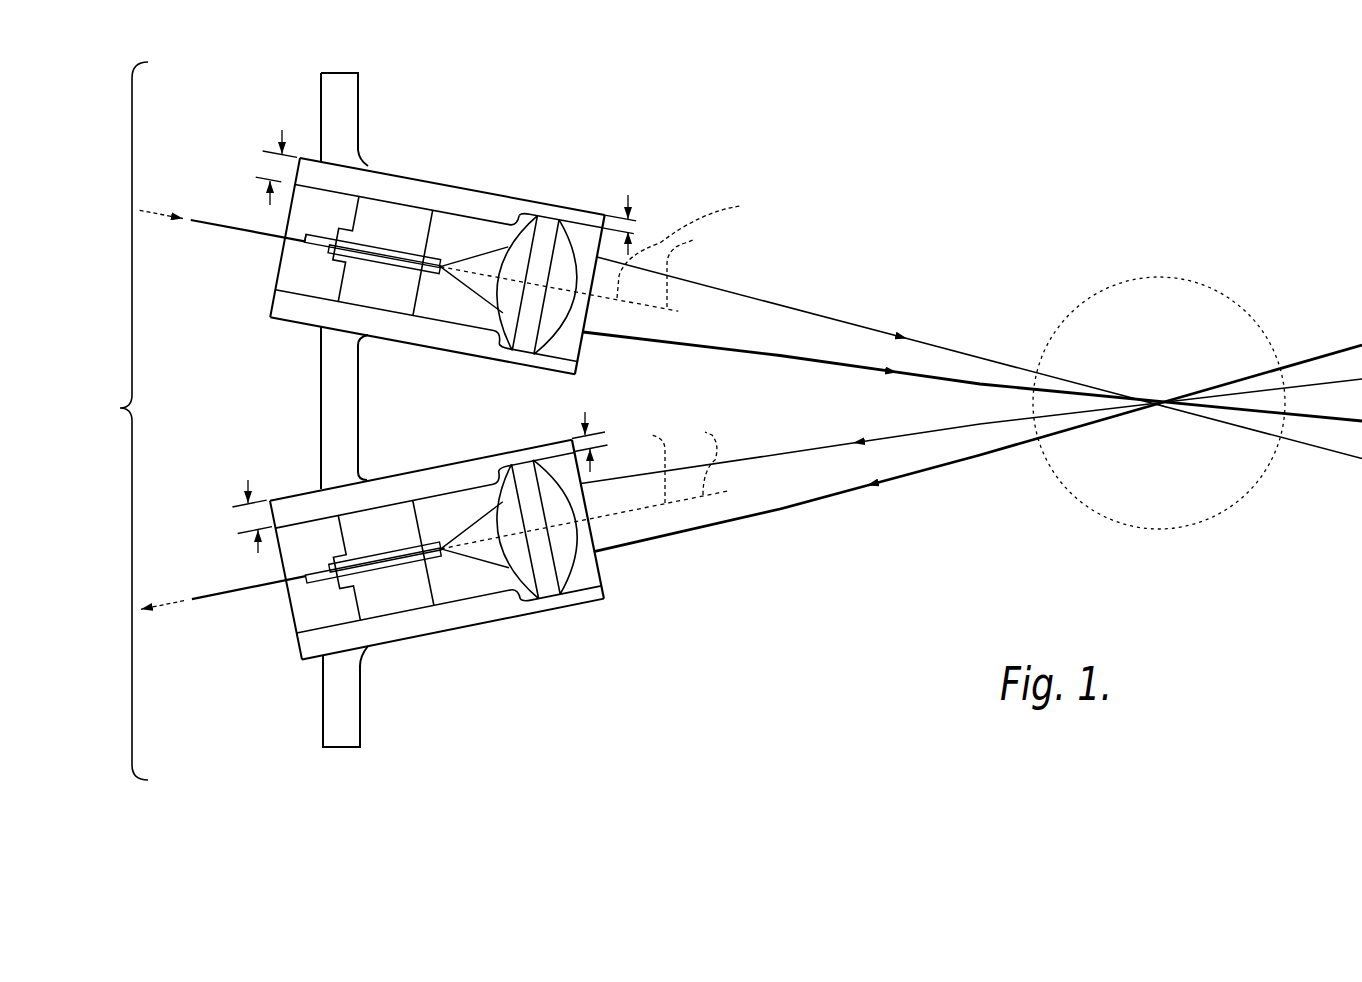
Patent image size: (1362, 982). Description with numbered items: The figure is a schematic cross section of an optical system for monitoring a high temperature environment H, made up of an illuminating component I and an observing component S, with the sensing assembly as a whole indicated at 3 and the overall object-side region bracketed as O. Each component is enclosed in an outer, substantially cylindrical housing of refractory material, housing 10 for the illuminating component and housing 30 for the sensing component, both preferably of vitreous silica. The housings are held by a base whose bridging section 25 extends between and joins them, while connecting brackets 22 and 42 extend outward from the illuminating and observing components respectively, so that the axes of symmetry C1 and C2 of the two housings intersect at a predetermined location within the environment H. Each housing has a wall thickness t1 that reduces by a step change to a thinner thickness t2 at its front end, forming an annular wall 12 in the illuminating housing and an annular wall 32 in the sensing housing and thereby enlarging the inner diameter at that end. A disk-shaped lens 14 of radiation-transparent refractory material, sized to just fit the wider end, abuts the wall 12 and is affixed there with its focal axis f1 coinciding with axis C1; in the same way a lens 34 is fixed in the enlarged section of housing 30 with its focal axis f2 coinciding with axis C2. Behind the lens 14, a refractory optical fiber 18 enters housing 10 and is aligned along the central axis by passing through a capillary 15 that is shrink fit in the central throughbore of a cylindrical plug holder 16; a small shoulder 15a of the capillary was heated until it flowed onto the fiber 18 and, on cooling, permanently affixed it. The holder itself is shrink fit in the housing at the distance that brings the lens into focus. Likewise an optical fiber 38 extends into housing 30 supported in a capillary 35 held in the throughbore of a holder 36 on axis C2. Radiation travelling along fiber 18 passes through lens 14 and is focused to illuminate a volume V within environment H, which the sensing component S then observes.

The object distance region O is at (120, 421).
The illuminating component I is at (803, 148).
The observing component S is at (607, 668).
The high temperature environment H is at (1187, 310).
The volume V is at (1158, 402).
The detector assembly 3 is at (437, 575).
The housing 10 is at (487, 192).
The annular wall 12 is at (528, 204).
The lens 14 is at (560, 217).
The capillary 15 is at (443, 250).
The shoulder 15a is at (317, 236).
The holder 16 is at (358, 218).
The optical fiber 18 is at (243, 228).
The connecting bracket 22 is at (357, 112).
The bridging section 25 is at (320, 424).
The housing 30 is at (413, 637).
The annular wall 32 is at (500, 462).
The lens 34 is at (580, 536).
The capillary 35 is at (446, 523).
The holder 36 is at (387, 527).
The optical fiber 38 is at (217, 590).
The connecting bracket 42 is at (360, 730).
The housing thickness t1 is at (267, 168).
The front end housing thickness t2 is at (640, 228).
The focal axis of the lens f1 is at (688, 246).
The focal axis of the lens f2 is at (646, 462).
The axis of symmetry C1 is at (160, 212).
The axis of symmetry C2 is at (185, 612).